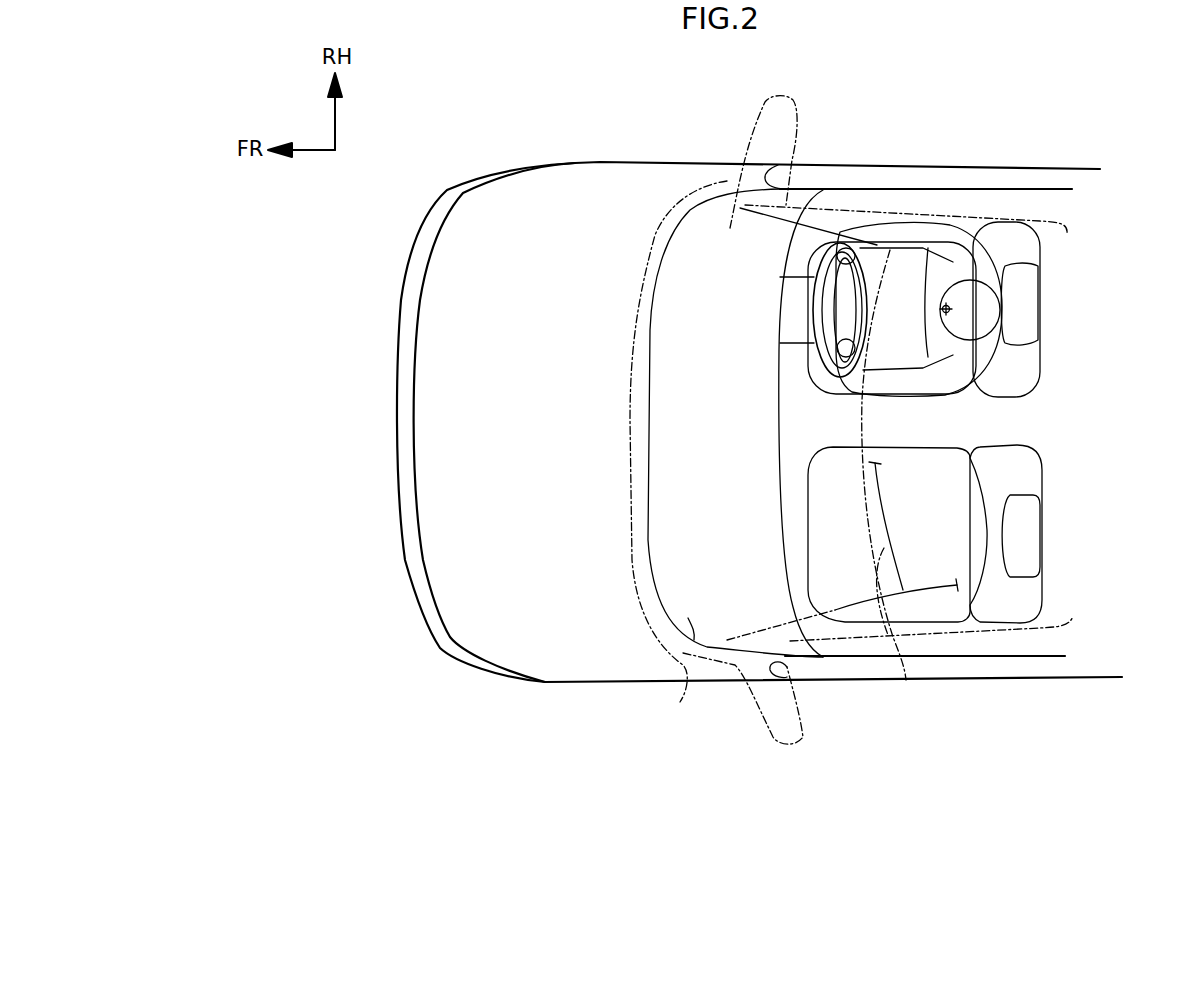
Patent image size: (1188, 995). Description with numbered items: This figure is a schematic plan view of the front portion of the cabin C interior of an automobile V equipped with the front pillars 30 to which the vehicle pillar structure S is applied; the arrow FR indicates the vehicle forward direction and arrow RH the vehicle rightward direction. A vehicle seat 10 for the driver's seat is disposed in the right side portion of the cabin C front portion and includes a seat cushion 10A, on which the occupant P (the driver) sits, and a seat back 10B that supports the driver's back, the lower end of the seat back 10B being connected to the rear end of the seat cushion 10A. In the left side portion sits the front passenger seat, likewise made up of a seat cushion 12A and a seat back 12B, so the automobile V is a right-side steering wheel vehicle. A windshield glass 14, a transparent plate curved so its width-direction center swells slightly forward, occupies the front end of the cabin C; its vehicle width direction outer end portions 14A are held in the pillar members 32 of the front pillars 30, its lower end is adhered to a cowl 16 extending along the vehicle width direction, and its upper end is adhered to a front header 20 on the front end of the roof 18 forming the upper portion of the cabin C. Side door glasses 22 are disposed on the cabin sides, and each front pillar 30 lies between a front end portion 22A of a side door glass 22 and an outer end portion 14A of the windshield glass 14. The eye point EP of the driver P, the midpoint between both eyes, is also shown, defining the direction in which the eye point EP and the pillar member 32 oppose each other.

The automobile V is at (1021, 170).
The vehicle seat 10 is at (966, 329).
The seat cushion 10A is at (832, 394).
The seat back 10B is at (1040, 346).
The seat cushion 12A is at (915, 447).
The seat back 12B is at (1042, 490).
The windshield glass 14 is at (680, 688).
The vehicle width direction outer end portions 14A is at (758, 208).
The cowl 16 is at (628, 410).
The roof 18 is at (983, 673).
The front header 20 is at (905, 676).
The side door glasses 22 is at (957, 200).
The front end portions 22A is at (860, 207).
The front pillar 30 is at (825, 207).
The pillar member 32 is at (796, 190).
The vehicle pillar structure S is at (857, 179).
The occupant P is at (993, 247).
The eye point EP is at (950, 309).
The cabin C is at (1030, 418).